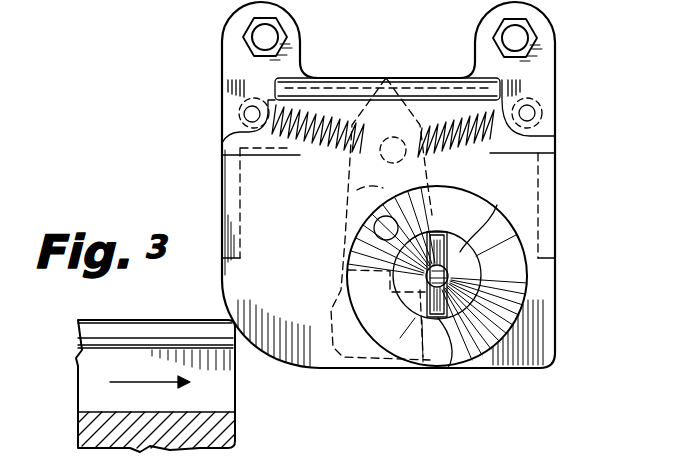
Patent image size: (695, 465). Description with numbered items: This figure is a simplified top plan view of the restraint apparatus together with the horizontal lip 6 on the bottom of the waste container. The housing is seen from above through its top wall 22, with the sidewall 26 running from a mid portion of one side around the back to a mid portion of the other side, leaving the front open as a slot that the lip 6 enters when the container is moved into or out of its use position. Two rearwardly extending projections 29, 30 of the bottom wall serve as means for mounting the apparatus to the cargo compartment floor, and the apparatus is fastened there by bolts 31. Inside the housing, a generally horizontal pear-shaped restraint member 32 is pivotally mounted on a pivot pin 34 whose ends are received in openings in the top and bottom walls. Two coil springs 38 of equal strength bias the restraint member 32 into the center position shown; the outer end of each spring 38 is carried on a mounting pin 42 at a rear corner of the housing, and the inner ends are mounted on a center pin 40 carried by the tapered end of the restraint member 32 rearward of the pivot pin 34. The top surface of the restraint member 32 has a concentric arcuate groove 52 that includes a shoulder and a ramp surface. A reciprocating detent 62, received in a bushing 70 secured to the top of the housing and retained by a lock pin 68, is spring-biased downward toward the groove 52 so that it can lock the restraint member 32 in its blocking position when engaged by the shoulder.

The horizontal lip 6 is at (145, 330).
The top wall 22 is at (552, 345).
The sidewall 26 is at (547, 212).
The rearwardly extending projection 29 is at (225, 42).
The rearwardly extending projection 30 is at (557, 47).
The bolt 31 is at (477, 30).
The restraint member 32 is at (343, 373).
The pivot pin 34 is at (384, 226).
The coil spring 38 is at (387, 78).
The center pin 40 is at (378, 175).
The mounting pin 42 is at (252, 114).
The arcuate groove 52 is at (397, 300).
The detent 62 is at (448, 281).
The lock pin 68 is at (448, 368).
The bushing 70 is at (490, 216).